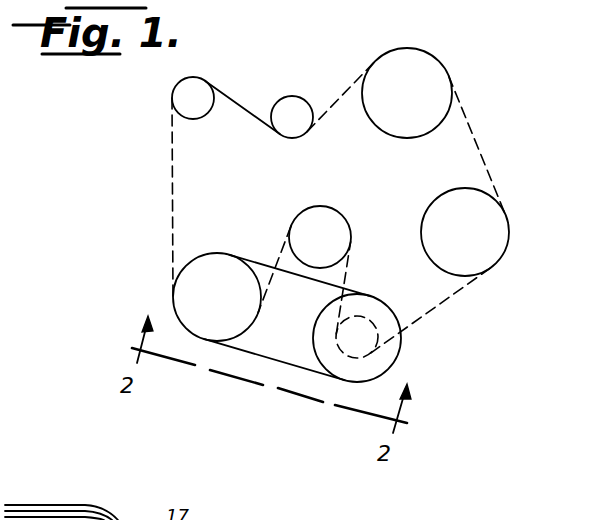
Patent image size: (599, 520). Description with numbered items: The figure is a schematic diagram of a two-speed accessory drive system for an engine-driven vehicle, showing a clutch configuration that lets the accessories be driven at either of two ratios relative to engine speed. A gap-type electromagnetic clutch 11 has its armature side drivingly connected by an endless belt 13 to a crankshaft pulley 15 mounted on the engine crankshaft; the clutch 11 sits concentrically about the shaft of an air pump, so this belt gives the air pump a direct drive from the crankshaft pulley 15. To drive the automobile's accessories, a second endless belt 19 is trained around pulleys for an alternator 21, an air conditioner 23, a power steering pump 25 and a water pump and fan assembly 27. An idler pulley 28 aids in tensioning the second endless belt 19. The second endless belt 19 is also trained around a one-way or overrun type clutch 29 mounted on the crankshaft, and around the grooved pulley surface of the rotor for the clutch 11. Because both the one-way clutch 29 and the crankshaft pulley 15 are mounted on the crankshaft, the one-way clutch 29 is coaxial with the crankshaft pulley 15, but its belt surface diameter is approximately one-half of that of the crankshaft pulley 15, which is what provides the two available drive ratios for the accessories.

The gap-type electromagnetic clutch 11 is at (183, 290).
The endless belt 13 is at (272, 368).
The crankshaft pulley 15 is at (393, 349).
The second endless belt 19 is at (172, 200).
The alternator 21 is at (184, 106).
The air conditioner 23 is at (429, 65).
The power steering pump 25 is at (484, 256).
The water pump and fan assembly 27 is at (322, 207).
The idler pulley 28 is at (303, 64).
The one-way clutch 29 is at (370, 322).